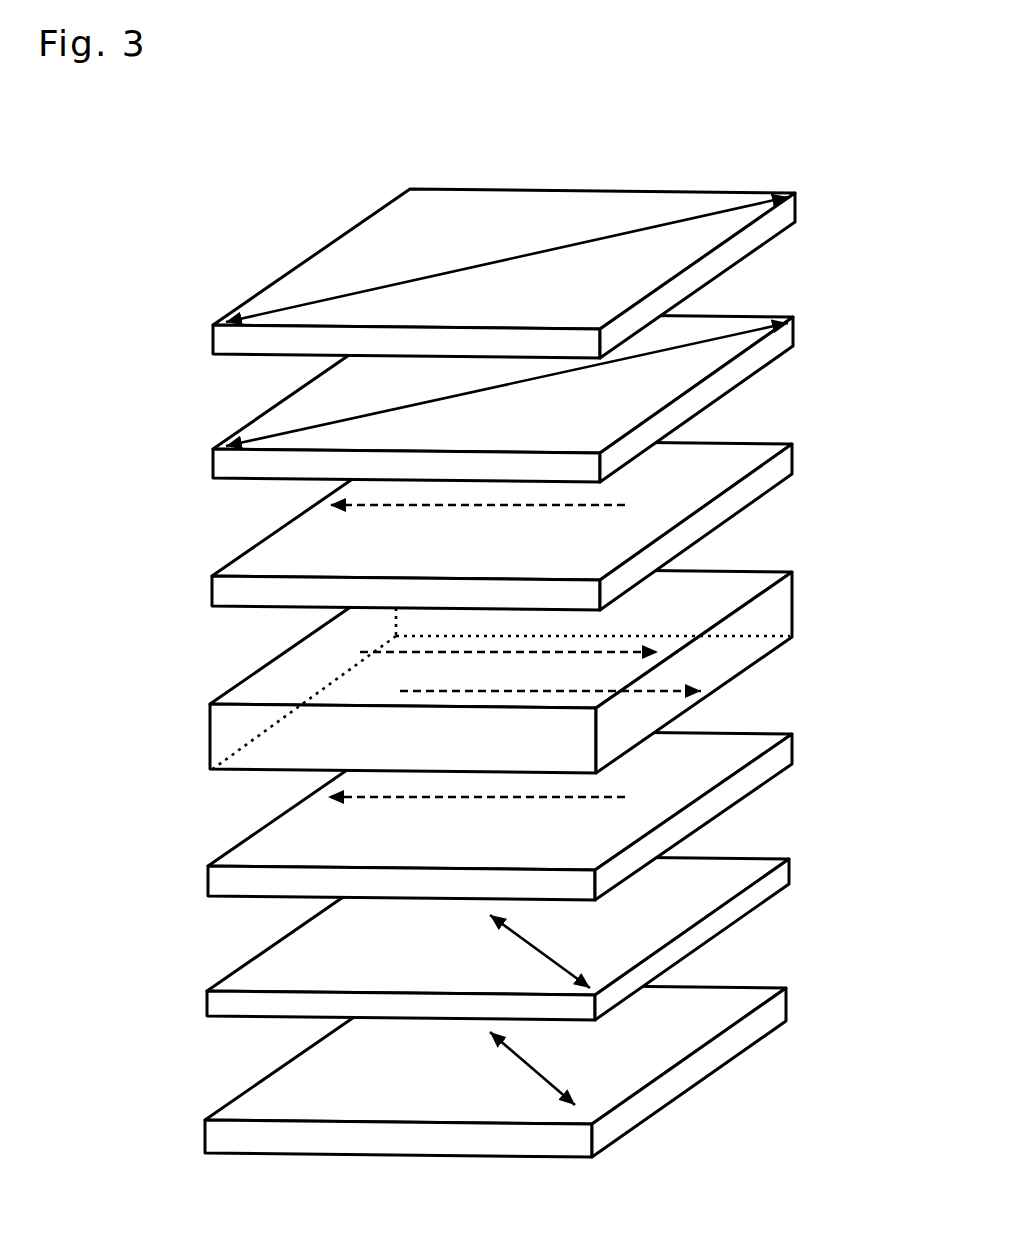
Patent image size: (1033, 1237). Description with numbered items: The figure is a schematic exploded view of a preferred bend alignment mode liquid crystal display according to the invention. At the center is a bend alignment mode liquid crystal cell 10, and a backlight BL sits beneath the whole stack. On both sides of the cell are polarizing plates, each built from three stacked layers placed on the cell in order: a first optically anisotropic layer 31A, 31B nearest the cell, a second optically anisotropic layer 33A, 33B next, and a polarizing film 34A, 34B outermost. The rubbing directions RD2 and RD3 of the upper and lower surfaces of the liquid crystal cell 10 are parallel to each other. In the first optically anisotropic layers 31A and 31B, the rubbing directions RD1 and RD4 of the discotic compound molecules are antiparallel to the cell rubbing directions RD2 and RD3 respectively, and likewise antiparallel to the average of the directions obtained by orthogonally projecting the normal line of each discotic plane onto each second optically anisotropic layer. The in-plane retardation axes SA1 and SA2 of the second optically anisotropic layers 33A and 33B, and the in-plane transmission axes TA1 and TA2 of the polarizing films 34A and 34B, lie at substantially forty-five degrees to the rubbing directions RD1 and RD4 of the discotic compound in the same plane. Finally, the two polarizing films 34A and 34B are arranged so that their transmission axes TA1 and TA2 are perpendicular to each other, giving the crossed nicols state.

The bend alignment mode liquid crystal cell 10 is at (725, 630).
The optically anisotropic layer (1) 31A is at (727, 497).
The optically anisotropic layer (1) 31B is at (723, 780).
The optically anisotropic layer (2) 33A is at (727, 383).
The optically anisotropic layer (2) 33B is at (717, 912).
The polarizing film 34A is at (727, 253).
The polarizing film 34B is at (713, 1044).
The in-plane transmission axis TA1 is at (465, 268).
The in-plane transmission axis TA2 is at (530, 1066).
The in-plane retardation axis SA1 is at (465, 393).
The in-plane retardation axis SA2 is at (540, 950).
The rubbing direction RD1 is at (503, 508).
The rubbing direction RD2 is at (487, 653).
The rubbing direction RD3 is at (529, 693).
The rubbing direction RD4 is at (502, 799).
The backlight BL is at (430, 1182).